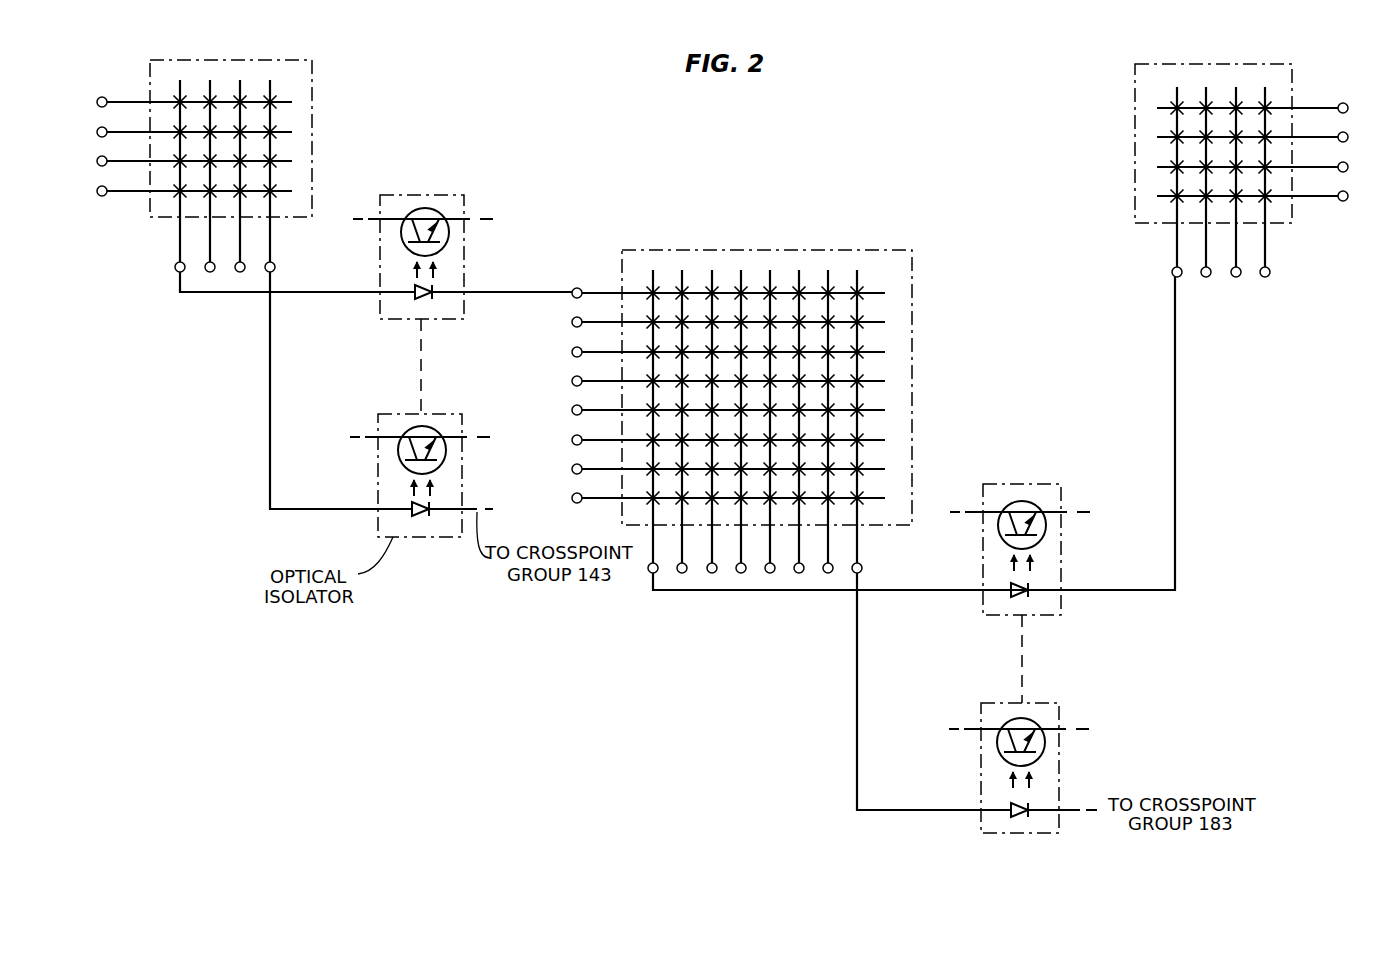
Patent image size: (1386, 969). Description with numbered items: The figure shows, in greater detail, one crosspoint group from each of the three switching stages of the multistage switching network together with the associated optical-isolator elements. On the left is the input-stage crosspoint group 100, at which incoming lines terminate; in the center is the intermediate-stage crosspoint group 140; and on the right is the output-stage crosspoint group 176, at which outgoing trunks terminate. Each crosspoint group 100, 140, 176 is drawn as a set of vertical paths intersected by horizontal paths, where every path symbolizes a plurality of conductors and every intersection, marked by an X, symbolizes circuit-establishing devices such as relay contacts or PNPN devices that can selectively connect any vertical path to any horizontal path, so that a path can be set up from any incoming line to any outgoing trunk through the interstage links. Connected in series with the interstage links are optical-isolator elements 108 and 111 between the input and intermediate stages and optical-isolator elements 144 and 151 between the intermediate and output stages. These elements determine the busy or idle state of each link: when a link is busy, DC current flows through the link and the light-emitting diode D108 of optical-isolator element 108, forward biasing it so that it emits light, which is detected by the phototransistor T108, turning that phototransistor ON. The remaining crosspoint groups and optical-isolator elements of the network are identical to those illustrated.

The crosspoint group 100 is at (312, 120).
The optical-isolator element 108 is at (442, 245).
The phototransistor T108 is at (437, 212).
The light-emitting diode D108 is at (433, 296).
The optical-isolator element 111 is at (452, 478).
The crosspoint group 140 is at (912, 328).
The optical-isolator element 144 is at (1058, 498).
The optical-isolator element 151 is at (1055, 712).
The crosspoint group 176 is at (1292, 213).